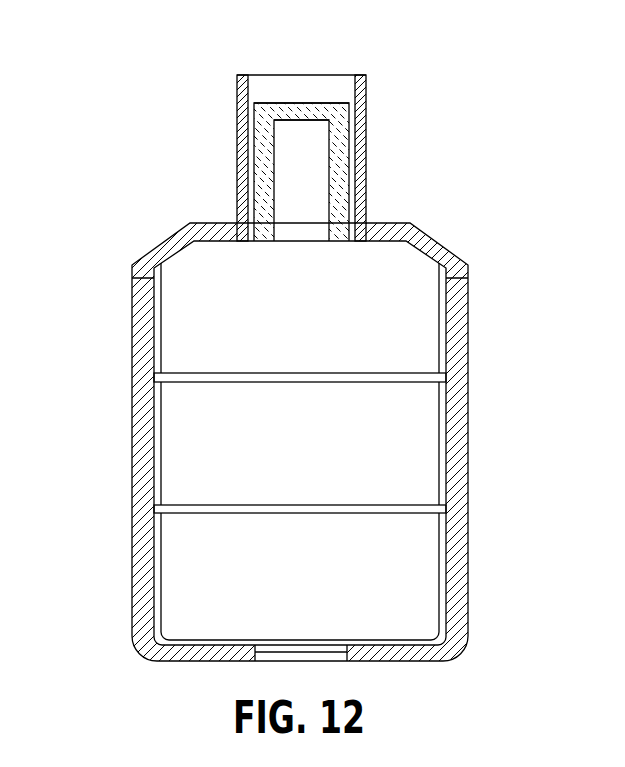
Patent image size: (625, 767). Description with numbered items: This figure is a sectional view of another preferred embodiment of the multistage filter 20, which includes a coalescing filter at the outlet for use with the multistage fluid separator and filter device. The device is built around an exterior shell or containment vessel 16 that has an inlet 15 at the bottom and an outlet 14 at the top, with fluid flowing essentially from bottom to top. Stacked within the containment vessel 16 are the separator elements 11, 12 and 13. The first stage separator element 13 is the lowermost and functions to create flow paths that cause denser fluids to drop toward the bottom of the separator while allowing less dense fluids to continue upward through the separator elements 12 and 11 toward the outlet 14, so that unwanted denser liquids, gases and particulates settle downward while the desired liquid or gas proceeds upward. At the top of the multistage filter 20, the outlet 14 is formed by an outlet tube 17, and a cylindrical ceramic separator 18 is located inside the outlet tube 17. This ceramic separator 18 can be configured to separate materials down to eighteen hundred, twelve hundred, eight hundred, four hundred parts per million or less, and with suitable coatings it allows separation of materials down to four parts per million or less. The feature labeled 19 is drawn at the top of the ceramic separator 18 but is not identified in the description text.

The separator element 11 is at (185, 322).
The separator element 12 is at (185, 460).
The first stage separator element 13 is at (185, 572).
The outlet 14 is at (330, 80).
The inlet 15 is at (303, 658).
The containment vessel 16 is at (468, 457).
The outlet tube 17 is at (366, 115).
The ceramic separator 18 is at (258, 182).
The sleeve closed end 19 is at (287, 110).
The multistage filter 20 is at (120, 237).